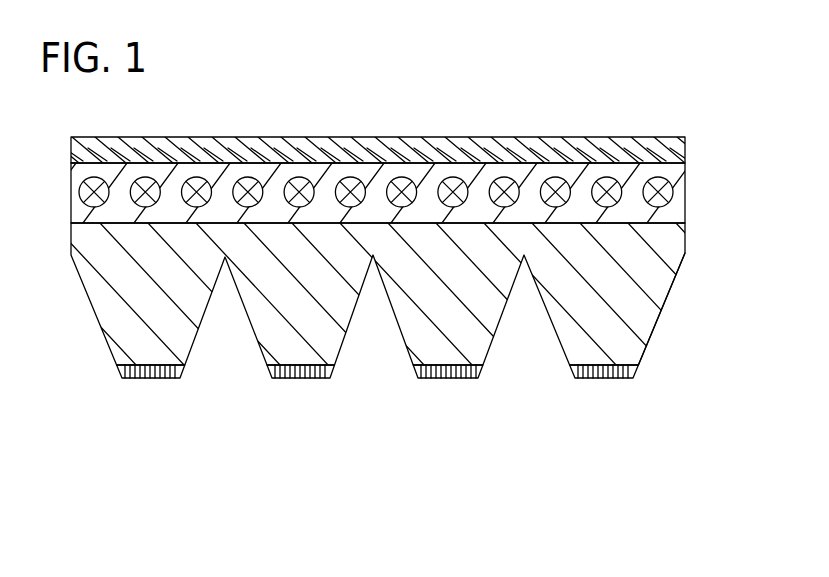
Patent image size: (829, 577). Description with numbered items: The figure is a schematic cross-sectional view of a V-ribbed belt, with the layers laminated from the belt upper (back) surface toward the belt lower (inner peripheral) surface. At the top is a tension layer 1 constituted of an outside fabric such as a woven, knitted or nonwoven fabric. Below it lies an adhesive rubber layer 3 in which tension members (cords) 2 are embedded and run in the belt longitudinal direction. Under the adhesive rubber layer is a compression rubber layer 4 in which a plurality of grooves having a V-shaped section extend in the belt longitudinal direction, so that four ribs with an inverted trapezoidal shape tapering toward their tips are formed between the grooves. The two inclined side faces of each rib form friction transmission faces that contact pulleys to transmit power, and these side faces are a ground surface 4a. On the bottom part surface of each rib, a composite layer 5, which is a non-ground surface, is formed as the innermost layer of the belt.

The tension layer 1 is at (392, 152).
The tension member (cord) 2 is at (300, 177).
The adhesive rubber layer 3 is at (678, 173).
The compression rubber layer 4 is at (637, 268).
The ground surface 4a is at (657, 315).
The composite layer 5 is at (282, 379).